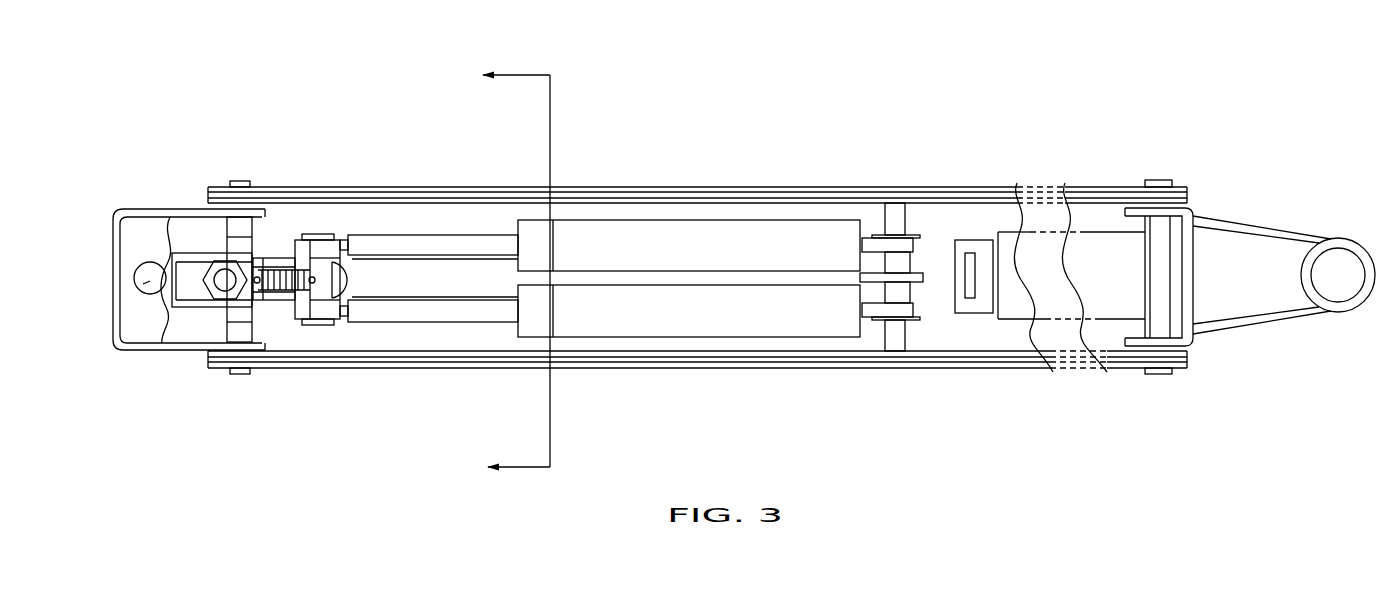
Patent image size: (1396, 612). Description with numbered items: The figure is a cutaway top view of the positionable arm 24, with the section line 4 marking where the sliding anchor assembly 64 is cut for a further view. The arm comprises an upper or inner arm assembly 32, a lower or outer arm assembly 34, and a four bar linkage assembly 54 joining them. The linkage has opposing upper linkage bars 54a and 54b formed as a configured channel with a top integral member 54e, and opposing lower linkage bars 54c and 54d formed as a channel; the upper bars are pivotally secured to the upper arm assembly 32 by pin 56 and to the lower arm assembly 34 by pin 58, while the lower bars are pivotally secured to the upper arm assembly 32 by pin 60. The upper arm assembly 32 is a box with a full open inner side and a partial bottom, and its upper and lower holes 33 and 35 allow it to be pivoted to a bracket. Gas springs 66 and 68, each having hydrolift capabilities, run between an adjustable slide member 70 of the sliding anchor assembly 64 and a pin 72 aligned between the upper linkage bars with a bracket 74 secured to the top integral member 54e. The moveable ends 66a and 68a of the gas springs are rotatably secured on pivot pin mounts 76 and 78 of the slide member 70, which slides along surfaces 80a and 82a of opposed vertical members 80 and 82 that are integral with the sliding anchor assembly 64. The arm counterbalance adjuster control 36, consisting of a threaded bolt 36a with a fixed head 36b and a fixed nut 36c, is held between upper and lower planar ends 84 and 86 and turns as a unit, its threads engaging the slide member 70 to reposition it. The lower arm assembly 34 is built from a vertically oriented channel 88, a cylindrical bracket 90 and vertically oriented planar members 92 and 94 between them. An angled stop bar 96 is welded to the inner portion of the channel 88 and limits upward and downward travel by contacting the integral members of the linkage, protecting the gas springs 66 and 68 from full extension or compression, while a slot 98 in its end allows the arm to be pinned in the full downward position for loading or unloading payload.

The section line 4- 4 is at (502, 275).
The positionable arm 24 is at (735, 78).
The upper arm assembly 32 is at (159, 228).
The upper hole 33 is at (148, 278).
The lower arm assembly 34 is at (1290, 249).
The lower hole 35 is at (128, 291).
The arm counterbalance adjuster control 36 is at (294, 307).
The threaded bolt 36a is at (336, 349).
The fixed head 36b is at (347, 285).
The fixed nut 36c is at (223, 292).
The four bar linkage assembly 54 is at (697, 243).
The upper linkage bar 54a is at (697, 379).
The upper linkage bar 54b is at (697, 168).
The lower linkage bar 54c is at (697, 373).
The lower linkage bar 54d is at (697, 179).
The top integral member 54e is at (1038, 282).
The pin 56 is at (223, 258).
The pin 58 is at (1136, 277).
The pin 60 is at (240, 378).
The sliding anchor assembly 64 is at (285, 334).
The gas spring 66 is at (596, 317).
The moveable end 66a is at (333, 313).
The gas spring 68 is at (578, 212).
The moveable end 68a is at (407, 206).
The adjustable slide member 70 is at (368, 257).
The pin 72 is at (906, 277).
The bracket 74 is at (917, 308).
The pivot pin mount 76 is at (328, 336).
The pivot pin mount 78 is at (323, 222).
The vertical member 80 is at (262, 357).
The surface 80a is at (270, 302).
The vertical member 82 is at (280, 183).
The surface 82a is at (297, 193).
The upper planar end 84 is at (238, 252).
The lower planar end 86 is at (353, 272).
The channel 88 is at (1183, 277).
The cylindrical bracket 90 is at (1344, 261).
The planar member 92 is at (1262, 327).
The planar member 94 is at (1262, 219).
The angled stop bar 96 is at (958, 272).
The slot 98 is at (1002, 325).